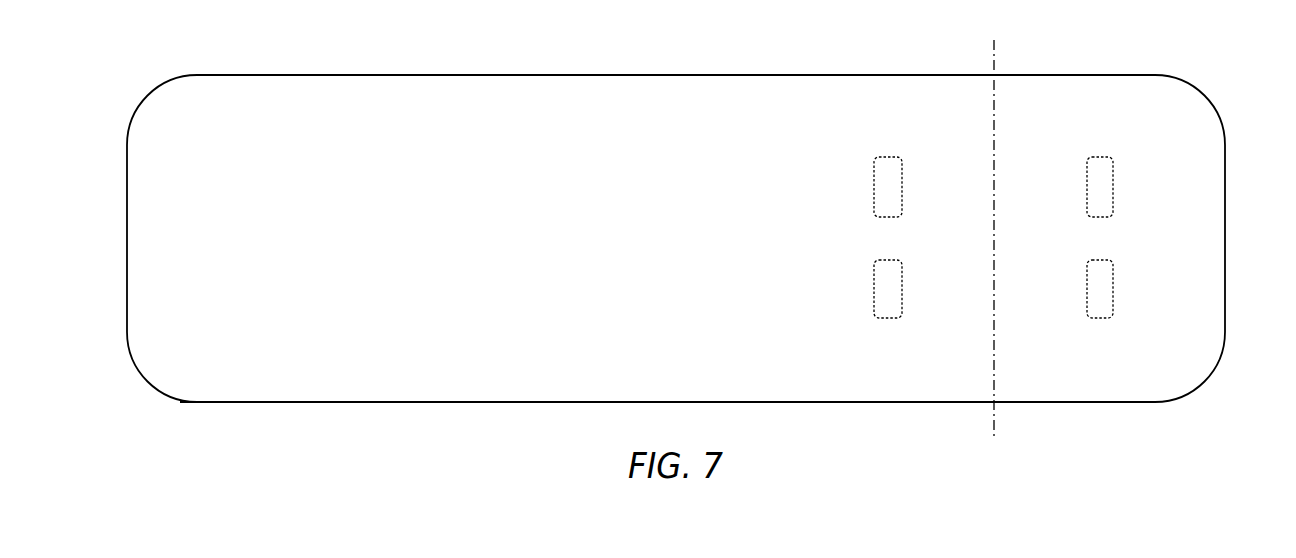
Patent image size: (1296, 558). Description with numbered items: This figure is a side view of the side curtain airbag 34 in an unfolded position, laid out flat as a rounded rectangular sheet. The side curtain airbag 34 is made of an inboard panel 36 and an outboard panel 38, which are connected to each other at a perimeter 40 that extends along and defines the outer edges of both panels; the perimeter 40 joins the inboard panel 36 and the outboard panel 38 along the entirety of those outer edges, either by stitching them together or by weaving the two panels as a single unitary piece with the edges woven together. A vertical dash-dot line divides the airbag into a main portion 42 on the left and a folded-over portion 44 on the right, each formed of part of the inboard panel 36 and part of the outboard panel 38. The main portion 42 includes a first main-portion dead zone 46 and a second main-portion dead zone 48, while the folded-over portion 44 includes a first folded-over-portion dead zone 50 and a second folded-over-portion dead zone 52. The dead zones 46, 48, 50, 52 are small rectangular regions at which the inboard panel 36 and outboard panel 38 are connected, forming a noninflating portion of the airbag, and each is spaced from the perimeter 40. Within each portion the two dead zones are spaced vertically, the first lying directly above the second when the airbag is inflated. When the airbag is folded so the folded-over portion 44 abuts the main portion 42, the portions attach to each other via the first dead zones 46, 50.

The side curtain airbag 34 is at (1256, 73).
The inboard panel 36 is at (225, 432).
The outboard panel 38 is at (333, 362).
The perimeter 40 is at (432, 402).
The main portion 42 is at (953, 362).
The folded-over portion 44 is at (1033, 362).
The first main-portion dead zone 46 is at (874, 180).
The second main-portion dead zone 48 is at (874, 283).
The first folded-over-portion dead zone 50 is at (1113, 180).
The second folded-over-portion dead zone 52 is at (1113, 283).